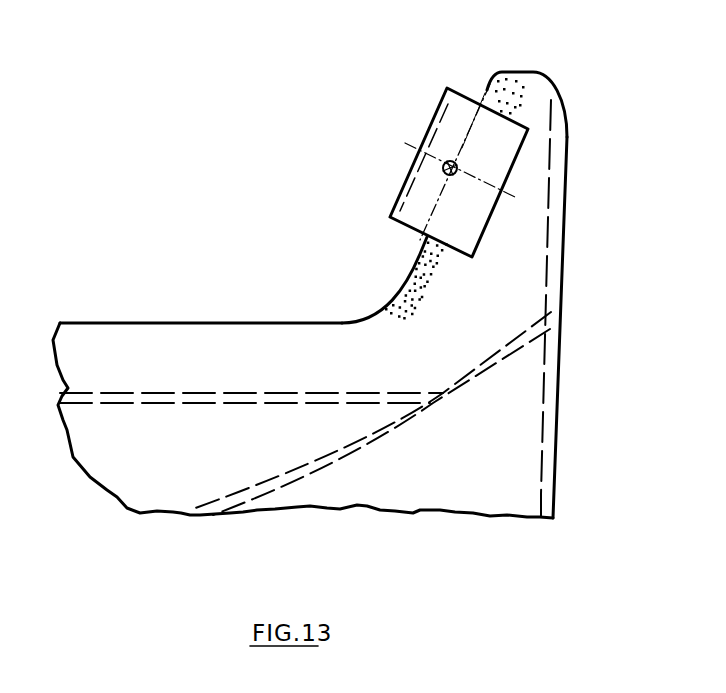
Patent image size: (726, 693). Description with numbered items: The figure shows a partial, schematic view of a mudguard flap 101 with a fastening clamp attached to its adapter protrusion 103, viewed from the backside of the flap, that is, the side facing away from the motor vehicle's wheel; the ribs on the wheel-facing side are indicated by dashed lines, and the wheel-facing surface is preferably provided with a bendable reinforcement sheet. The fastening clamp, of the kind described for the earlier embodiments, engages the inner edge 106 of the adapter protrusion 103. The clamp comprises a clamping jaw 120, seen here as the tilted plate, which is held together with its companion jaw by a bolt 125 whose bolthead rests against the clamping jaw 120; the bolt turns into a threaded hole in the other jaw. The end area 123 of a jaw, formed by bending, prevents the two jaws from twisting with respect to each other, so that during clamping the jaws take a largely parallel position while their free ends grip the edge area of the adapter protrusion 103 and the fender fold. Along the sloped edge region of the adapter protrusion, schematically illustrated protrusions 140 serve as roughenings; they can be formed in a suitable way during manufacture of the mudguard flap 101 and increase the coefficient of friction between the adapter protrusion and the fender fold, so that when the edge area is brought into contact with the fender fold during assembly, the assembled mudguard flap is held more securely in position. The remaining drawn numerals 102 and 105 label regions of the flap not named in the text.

The mudguard flap 101 is at (382, 512).
The interior reinforcement 102 is at (475, 497).
The adapter protrusion 103 is at (568, 207).
The top surface 105 is at (235, 323).
The inner edge 106 is at (488, 78).
The clamping jaw 120 is at (448, 104).
The end area 123 is at (392, 207).
The bolt 125 is at (443, 167).
The protrusions 140 is at (392, 288).